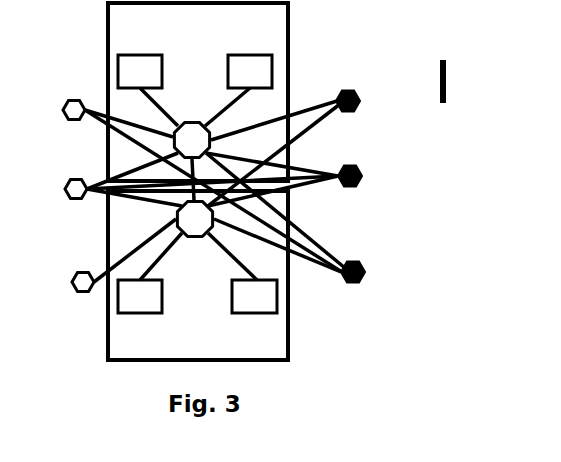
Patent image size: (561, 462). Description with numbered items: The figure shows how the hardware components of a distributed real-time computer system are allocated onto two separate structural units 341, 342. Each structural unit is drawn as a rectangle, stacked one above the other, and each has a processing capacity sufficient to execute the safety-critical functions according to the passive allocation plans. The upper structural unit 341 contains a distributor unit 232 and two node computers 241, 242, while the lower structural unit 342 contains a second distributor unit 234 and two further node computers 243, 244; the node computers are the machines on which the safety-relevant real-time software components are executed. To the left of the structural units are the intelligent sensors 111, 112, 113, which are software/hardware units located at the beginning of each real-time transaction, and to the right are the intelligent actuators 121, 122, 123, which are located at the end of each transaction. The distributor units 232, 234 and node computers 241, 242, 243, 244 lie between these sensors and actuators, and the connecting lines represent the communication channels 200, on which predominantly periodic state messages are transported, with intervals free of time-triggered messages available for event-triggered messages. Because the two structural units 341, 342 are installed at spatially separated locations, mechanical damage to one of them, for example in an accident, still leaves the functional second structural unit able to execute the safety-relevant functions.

The intelligent sensor 111 is at (56, 108).
The intelligent sensor 112 is at (56, 186).
The intelligent sensor 113 is at (60, 277).
The intelligent actuator 121 is at (377, 85).
The intelligent actuator 122 is at (382, 160).
The intelligent actuator 123 is at (378, 260).
The communication channel 200 is at (455, 85).
The distributor unit 232 is at (193, 115).
The distributor unit 234 is at (195, 245).
The node computer 241 is at (137, 49).
The node computer 242 is at (250, 49).
The node computer 243 is at (138, 318).
The node computer 244 is at (257, 318).
The structural unit 341 is at (105, 29).
The structural unit 342 is at (93, 330).